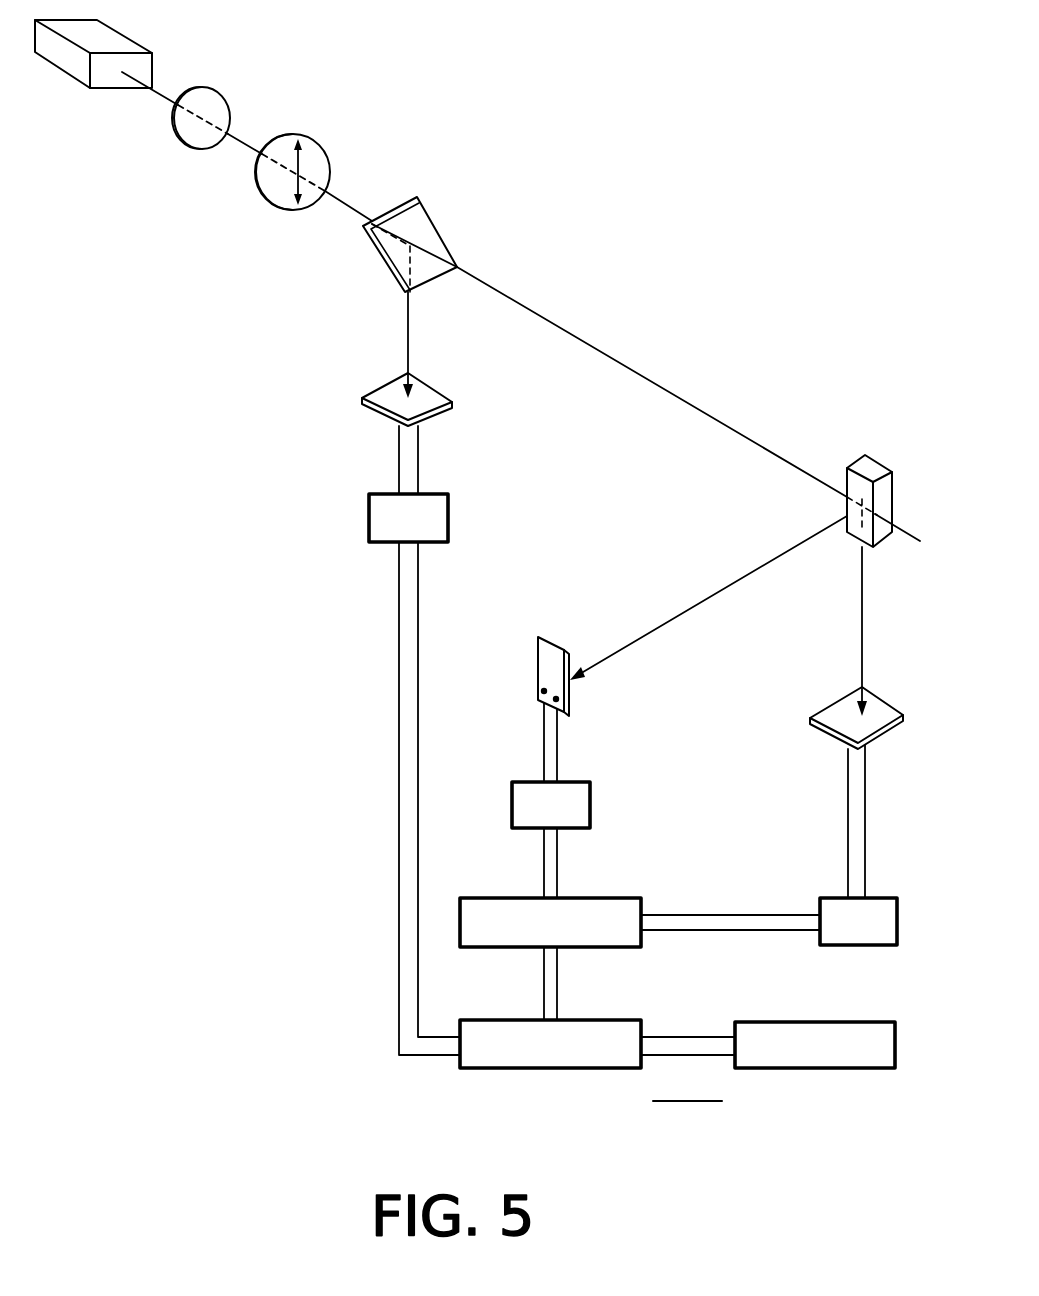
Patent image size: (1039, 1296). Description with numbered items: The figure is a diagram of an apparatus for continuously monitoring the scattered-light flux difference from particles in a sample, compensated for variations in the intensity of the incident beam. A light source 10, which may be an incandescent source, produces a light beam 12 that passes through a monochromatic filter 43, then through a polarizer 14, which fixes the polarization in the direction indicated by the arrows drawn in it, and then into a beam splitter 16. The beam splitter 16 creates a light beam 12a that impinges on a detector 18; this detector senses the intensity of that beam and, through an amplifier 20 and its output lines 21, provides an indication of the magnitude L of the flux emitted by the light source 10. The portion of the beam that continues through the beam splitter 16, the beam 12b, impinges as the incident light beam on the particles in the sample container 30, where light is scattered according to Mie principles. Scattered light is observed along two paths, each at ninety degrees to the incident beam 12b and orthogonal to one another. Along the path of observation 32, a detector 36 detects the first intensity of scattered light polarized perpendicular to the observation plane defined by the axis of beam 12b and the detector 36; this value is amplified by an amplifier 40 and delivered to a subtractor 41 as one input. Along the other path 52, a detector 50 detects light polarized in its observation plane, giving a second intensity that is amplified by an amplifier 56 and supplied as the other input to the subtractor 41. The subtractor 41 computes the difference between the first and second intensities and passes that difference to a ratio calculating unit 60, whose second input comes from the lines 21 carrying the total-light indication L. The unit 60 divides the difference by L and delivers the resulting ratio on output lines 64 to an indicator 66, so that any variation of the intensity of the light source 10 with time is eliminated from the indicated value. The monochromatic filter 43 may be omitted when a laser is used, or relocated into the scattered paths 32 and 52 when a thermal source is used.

The light source 10 is at (70, 75).
The light beam 12 is at (168, 96).
The monochromatic filter 43 is at (228, 96).
The polarizer 14 is at (320, 137).
The beam splitter 16 is at (375, 256).
The light beam 12a is at (408, 326).
The light beam 12b is at (562, 333).
The detector 18 is at (440, 386).
The amplifier 20 is at (449, 508).
The output lines 21 is at (418, 768).
The sample container 30 is at (857, 460).
The path of observation 32 is at (752, 572).
The detector 36 is at (537, 658).
The amplifier 40 is at (592, 790).
The subtractor 41 is at (606, 898).
The detector 50 is at (835, 702).
The path of observation 52 is at (865, 614).
The amplifier 56 is at (828, 898).
The ratio calculating unit 60 is at (500, 1020).
The output lines 64 is at (684, 1062).
The indicator 66 is at (835, 1022).